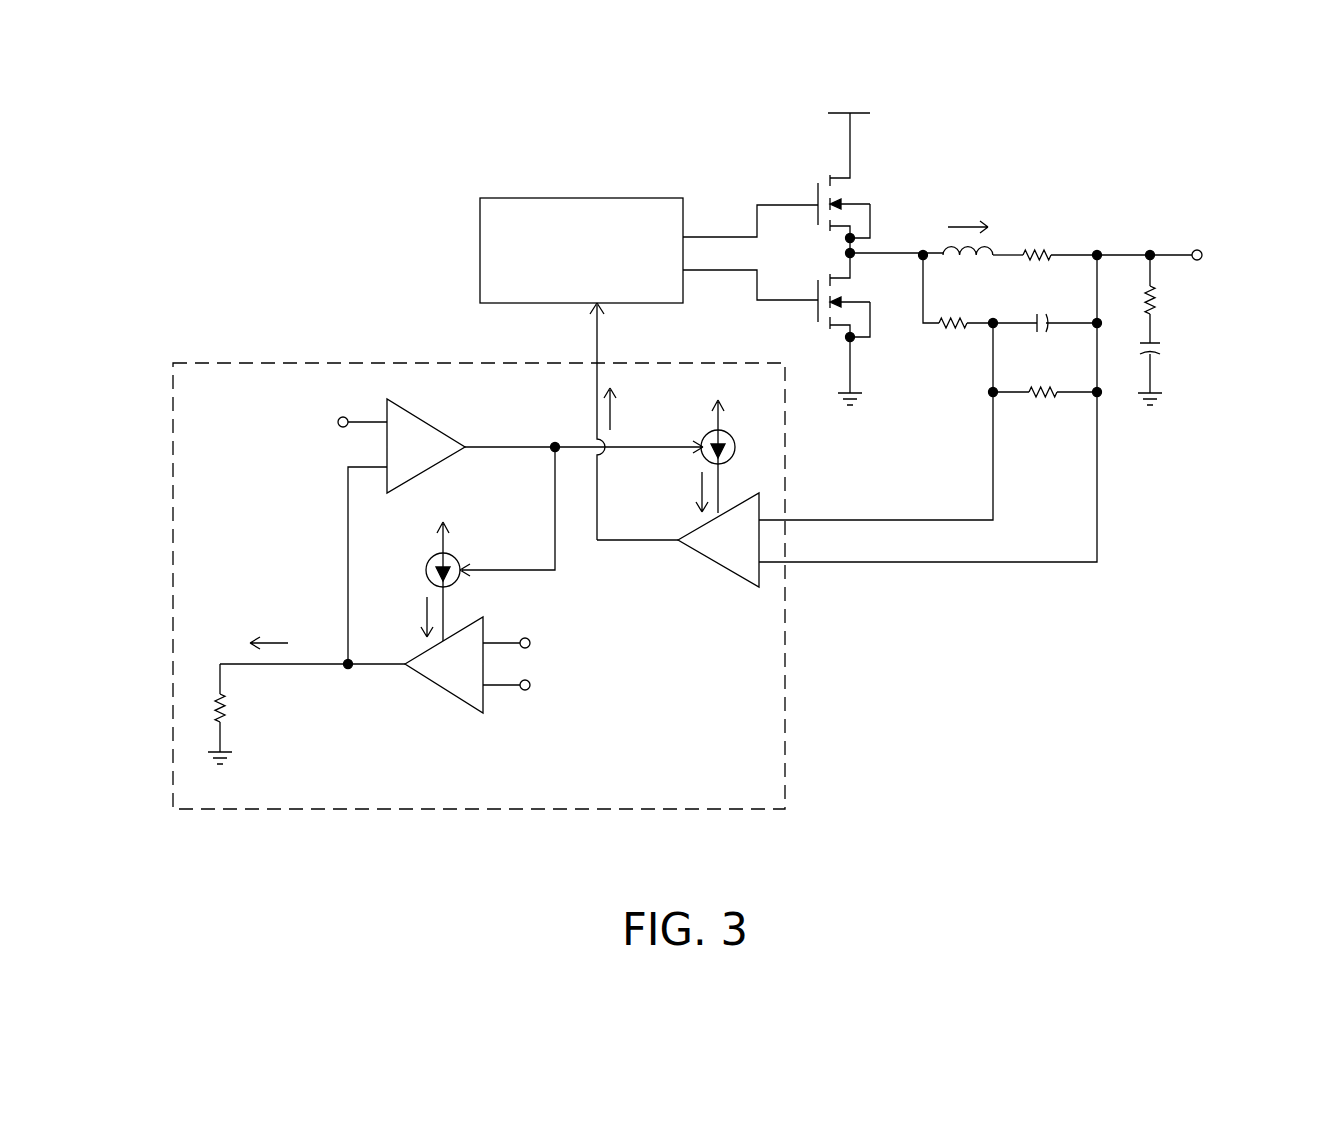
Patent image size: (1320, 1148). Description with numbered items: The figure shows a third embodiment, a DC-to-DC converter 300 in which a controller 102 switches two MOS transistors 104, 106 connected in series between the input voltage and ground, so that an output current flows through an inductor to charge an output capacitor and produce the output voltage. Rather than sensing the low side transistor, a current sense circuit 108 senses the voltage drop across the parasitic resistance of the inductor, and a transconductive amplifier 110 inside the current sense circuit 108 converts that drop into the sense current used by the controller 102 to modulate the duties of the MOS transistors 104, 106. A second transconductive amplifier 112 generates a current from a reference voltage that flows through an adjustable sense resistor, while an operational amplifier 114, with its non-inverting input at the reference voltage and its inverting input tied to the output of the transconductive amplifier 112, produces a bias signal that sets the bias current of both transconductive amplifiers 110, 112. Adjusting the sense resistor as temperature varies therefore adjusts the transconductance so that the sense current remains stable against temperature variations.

The DC-to-DC converter 300 is at (1100, 150).
The controller 102 is at (577, 198).
The MOS transistor 104 is at (815, 169).
The MOS transistor 106 is at (815, 326).
The current sense circuit 108 is at (395, 363).
The transconductive amplifier 110 is at (717, 565).
The transconductive amplifier 112 is at (437, 687).
The operational amplifier 114 is at (428, 418).